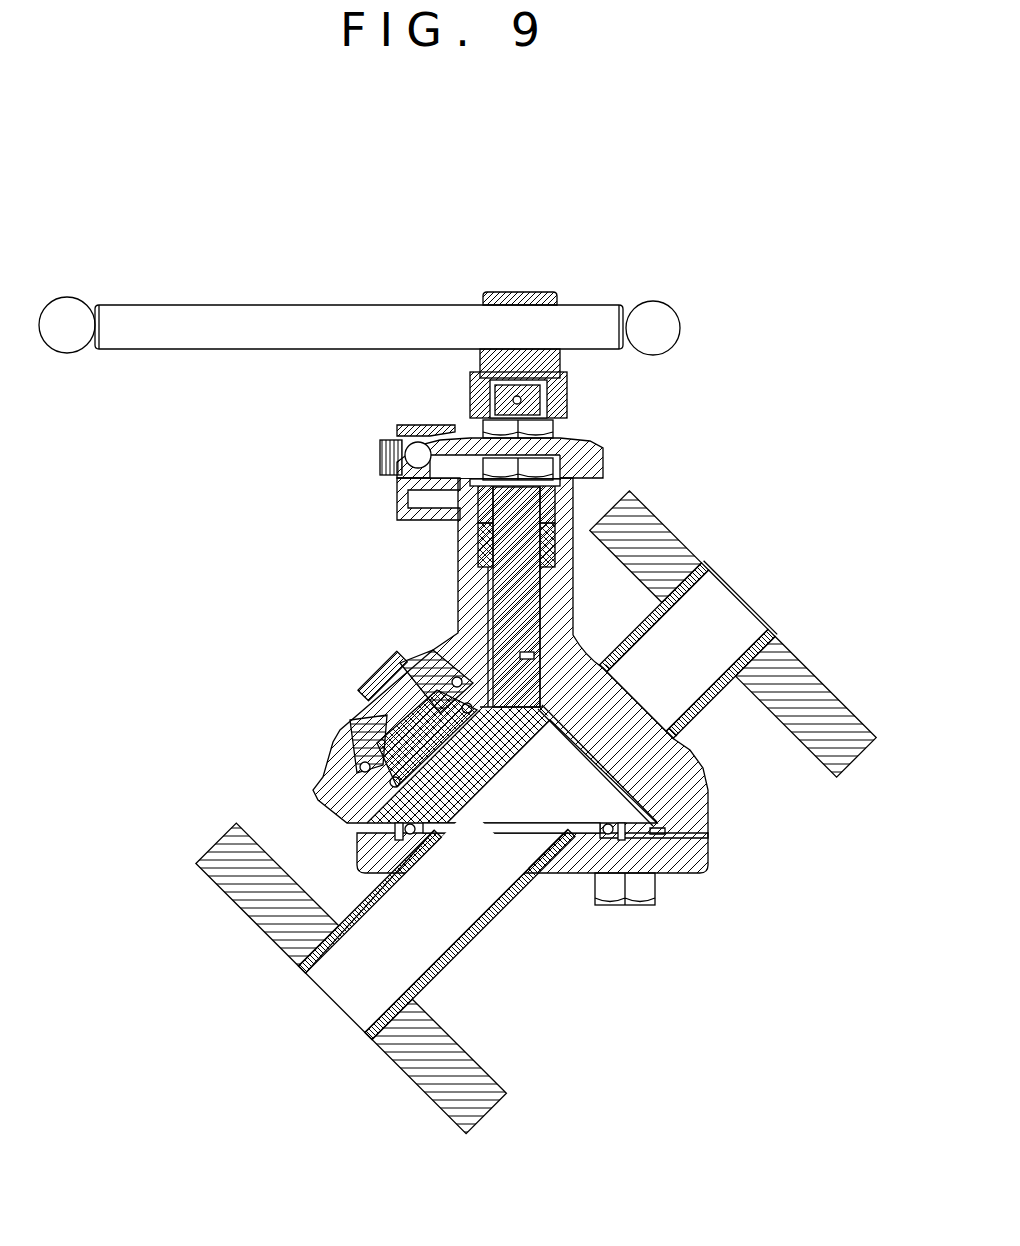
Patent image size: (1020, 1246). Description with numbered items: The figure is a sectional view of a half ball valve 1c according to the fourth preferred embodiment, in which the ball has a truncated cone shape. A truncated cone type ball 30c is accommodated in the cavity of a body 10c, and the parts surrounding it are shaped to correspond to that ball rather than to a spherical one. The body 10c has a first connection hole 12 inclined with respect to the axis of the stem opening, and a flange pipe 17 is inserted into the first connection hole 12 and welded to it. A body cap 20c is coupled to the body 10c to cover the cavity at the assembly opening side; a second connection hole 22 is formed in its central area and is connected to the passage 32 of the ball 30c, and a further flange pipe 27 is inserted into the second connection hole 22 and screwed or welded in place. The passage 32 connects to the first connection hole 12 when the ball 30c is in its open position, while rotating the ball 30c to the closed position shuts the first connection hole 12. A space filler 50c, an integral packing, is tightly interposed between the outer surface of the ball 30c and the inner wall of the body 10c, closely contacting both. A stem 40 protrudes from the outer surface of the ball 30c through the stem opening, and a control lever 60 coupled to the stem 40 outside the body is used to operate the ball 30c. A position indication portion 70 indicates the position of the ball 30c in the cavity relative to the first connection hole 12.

The half ball valve 1c is at (805, 347).
The control lever 60 is at (583, 290).
The position indication portion 70 is at (613, 441).
The flange pipe 17 is at (683, 552).
The stem 40 is at (503, 582).
The truncated cone type ball 30c is at (440, 722).
The space filler 50c is at (383, 750).
The body 10c is at (343, 781).
The body cap 20c is at (440, 873).
The first connection hole 12 is at (616, 743).
The passage 32 is at (541, 794).
The second connection hole 22 is at (483, 854).
The flange pipe 27 is at (425, 1072).